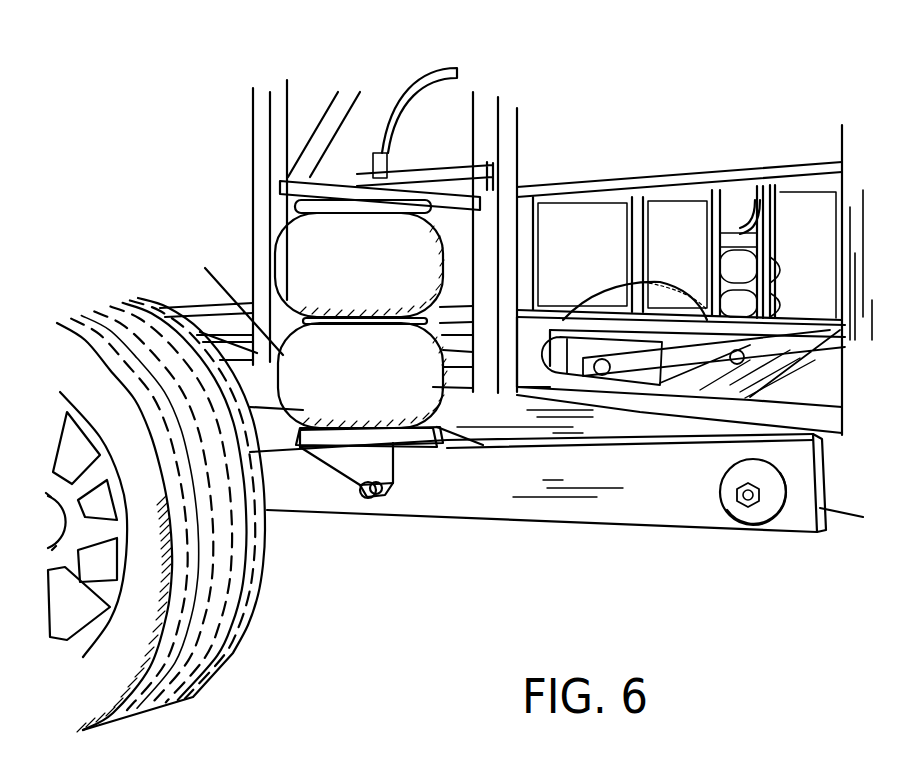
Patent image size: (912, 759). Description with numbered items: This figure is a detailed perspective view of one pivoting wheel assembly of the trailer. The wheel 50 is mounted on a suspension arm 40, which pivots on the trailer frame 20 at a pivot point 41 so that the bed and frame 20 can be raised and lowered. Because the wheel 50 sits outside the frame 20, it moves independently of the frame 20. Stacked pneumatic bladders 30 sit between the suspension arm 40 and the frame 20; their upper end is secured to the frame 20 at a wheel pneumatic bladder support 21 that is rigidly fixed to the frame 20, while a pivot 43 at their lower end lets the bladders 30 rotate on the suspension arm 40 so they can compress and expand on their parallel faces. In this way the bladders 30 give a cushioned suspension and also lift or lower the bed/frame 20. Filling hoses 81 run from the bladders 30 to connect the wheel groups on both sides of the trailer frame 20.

The frame 20 is at (605, 178).
The wheel pneumatic bladder support 21 is at (330, 102).
The pneumatic bladder 30 is at (275, 245).
The suspension arm 40 is at (513, 520).
The pivot point 41 is at (722, 520).
The pivot 43 is at (395, 490).
The wheel 50 is at (230, 663).
The filling hose 81 is at (427, 75).